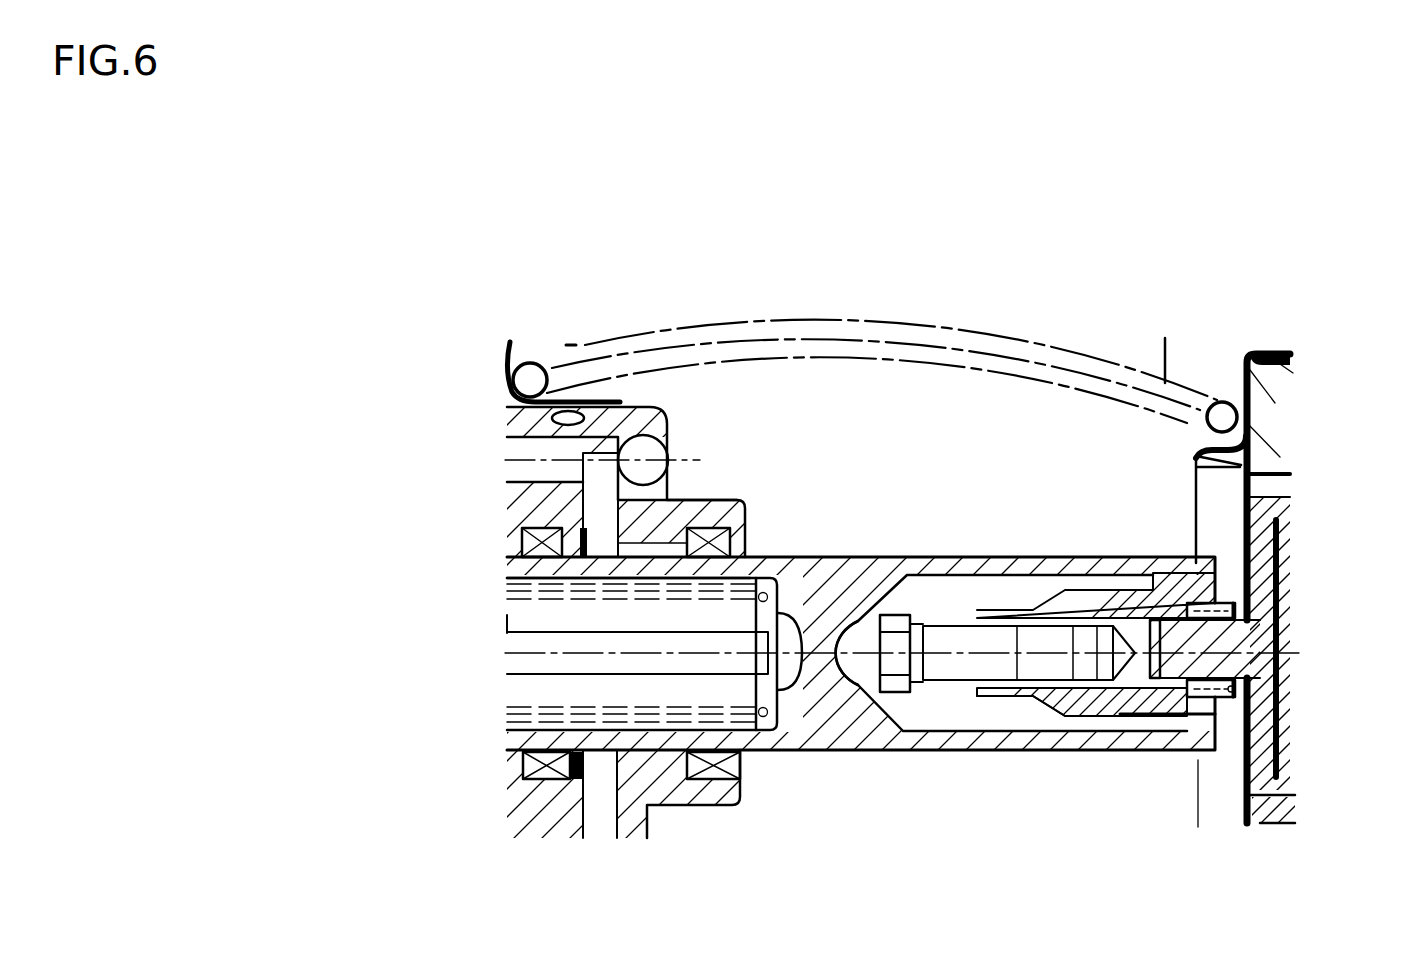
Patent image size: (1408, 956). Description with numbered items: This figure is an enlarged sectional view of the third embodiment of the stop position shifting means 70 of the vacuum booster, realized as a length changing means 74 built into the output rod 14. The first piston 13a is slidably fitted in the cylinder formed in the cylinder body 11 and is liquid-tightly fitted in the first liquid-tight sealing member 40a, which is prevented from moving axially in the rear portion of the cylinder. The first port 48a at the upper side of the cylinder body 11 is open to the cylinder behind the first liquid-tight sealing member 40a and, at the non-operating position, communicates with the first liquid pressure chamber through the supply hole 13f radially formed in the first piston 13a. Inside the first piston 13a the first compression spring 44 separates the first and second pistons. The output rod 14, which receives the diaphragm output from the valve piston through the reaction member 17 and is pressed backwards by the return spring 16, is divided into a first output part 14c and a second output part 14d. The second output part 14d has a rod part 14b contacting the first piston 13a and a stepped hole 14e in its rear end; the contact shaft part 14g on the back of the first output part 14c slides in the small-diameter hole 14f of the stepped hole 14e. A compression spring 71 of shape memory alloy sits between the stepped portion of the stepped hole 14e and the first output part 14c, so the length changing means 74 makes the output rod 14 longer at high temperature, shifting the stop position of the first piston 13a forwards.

The cylinder body 11 is at (633, 803).
The first piston 13a is at (805, 750).
The supply hole 13f is at (553, 575).
The output rod 14 is at (1120, 697).
The rod part 14b is at (940, 672).
The first output part 14c is at (1280, 653).
The second output part 14d is at (1050, 690).
The stepped hole 14e is at (1185, 732).
The small-diameter hole 14f is at (1128, 705).
The contact shaft part 14g is at (1180, 637).
The return spring 16 is at (918, 322).
The reaction member 17 is at (1283, 548).
The first liquid-tight sealing member 40a is at (522, 540).
The first compression spring 44 is at (545, 710).
The first port 48a is at (597, 545).
The stop position shifting means 70 is at (895, 653).
The compression spring 71 is at (1227, 700).
The length changing means 74 is at (1037, 750).